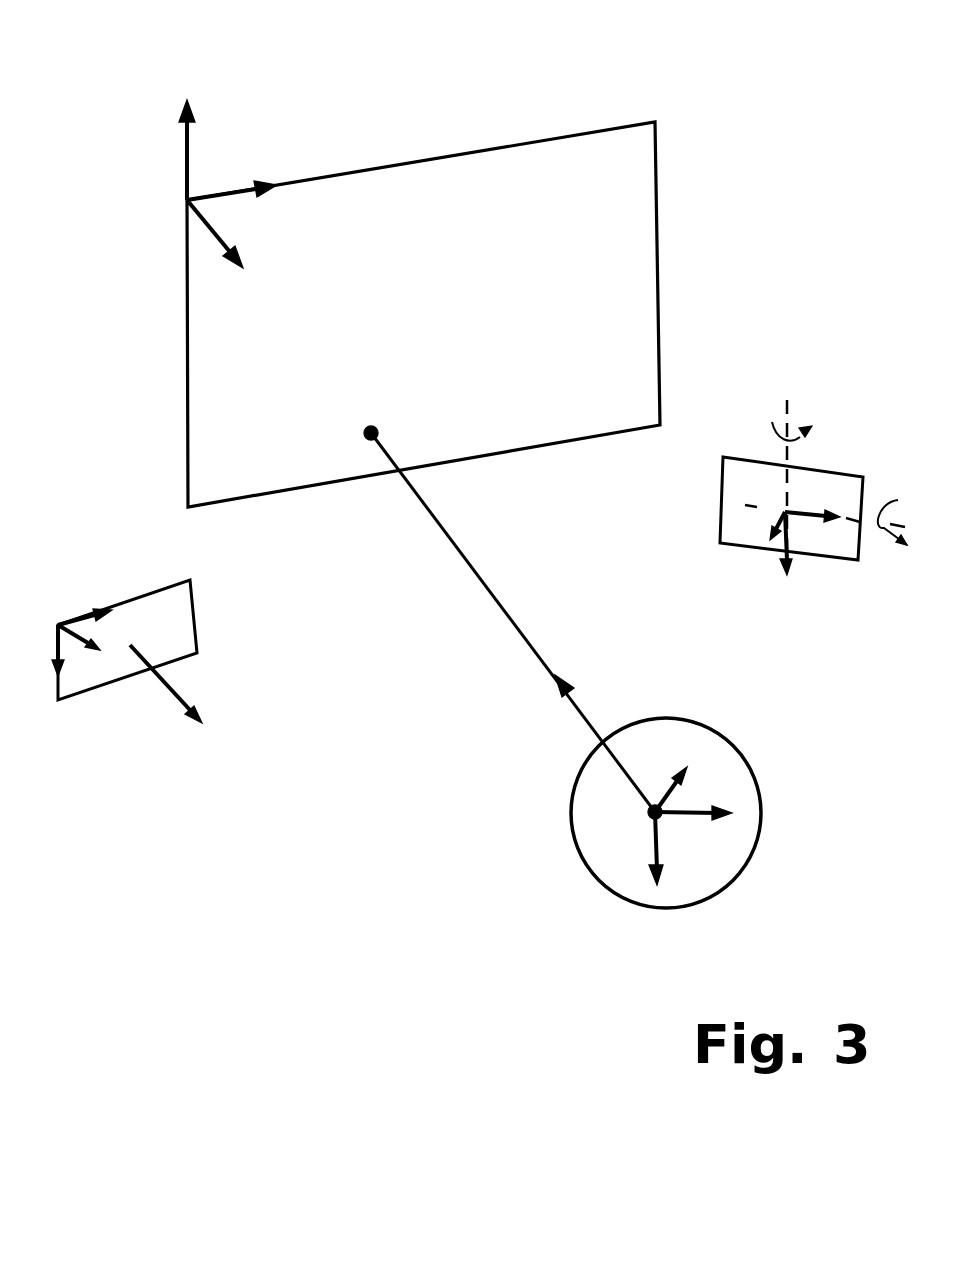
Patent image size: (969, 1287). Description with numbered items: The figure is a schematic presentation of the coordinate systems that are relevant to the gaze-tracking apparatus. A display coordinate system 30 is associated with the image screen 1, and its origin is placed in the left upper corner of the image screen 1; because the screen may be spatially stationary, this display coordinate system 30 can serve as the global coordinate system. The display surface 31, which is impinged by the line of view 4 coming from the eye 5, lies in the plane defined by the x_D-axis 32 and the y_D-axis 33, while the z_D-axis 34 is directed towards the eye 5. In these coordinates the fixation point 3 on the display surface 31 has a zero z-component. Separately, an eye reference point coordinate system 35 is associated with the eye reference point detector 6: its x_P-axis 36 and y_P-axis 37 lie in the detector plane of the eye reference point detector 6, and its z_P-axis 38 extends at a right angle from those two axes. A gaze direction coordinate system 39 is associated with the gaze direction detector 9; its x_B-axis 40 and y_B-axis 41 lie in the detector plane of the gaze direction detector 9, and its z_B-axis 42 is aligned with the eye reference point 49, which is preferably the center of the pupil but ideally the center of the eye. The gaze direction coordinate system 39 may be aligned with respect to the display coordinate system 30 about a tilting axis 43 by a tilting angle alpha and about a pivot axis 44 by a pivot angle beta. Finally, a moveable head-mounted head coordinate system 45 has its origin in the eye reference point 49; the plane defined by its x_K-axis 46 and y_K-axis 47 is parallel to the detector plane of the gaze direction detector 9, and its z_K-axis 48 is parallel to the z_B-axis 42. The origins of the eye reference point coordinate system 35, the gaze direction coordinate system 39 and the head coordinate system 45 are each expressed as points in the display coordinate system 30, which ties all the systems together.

The image screen 1 is at (623, 162).
The display surface 31 is at (552, 239).
The display coordinate system 30 is at (207, 151).
The x_D-axis 32 is at (230, 187).
The y_D-axis 33 is at (183, 160).
The z_D-axis 34 is at (208, 233).
The fixation point 3 is at (367, 443).
The line of view 4 is at (513, 604).
The eye 5 is at (710, 727).
The head coordinate system 45 is at (662, 807).
The x_K-axis 46 is at (693, 810).
The y_K-axis 47 is at (653, 845).
The z_K-axis 48 is at (667, 790).
The eye reference point 49 is at (647, 813).
The eye reference point detector 6 is at (205, 625).
The eye reference point coordinate system 35 is at (55, 615).
The x_P-axis 36 is at (73, 617).
The y_P-axis 37 is at (60, 647).
The z_P-axis 38 is at (93, 627).
The gaze direction detector 9 is at (775, 510).
The gaze direction coordinate system 39 is at (800, 535).
The x_B-axis 40 is at (783, 510).
The y_B-axis 41 is at (783, 533).
The z_B-axis 42 is at (780, 512).
The tilting axis 43 is at (852, 520).
The pivot axis 44 is at (790, 445).
The pivot angle beta is at (787, 402).
The tilting angle alpha is at (883, 513).